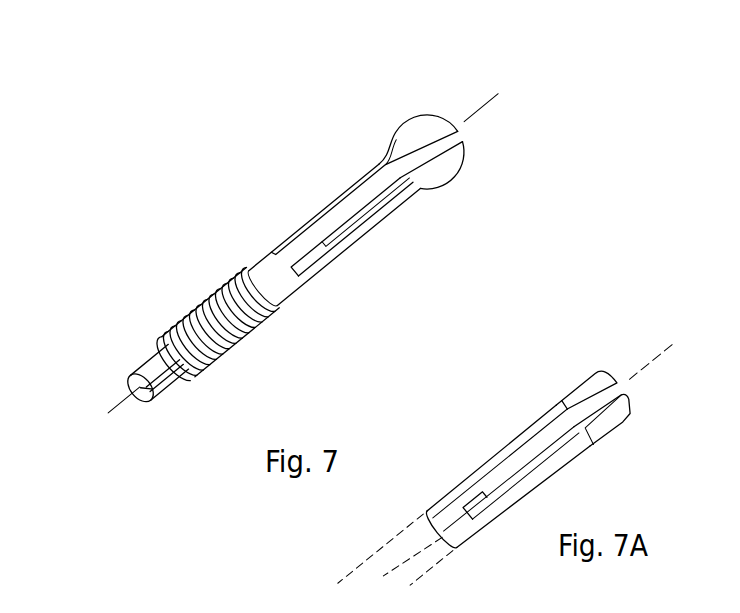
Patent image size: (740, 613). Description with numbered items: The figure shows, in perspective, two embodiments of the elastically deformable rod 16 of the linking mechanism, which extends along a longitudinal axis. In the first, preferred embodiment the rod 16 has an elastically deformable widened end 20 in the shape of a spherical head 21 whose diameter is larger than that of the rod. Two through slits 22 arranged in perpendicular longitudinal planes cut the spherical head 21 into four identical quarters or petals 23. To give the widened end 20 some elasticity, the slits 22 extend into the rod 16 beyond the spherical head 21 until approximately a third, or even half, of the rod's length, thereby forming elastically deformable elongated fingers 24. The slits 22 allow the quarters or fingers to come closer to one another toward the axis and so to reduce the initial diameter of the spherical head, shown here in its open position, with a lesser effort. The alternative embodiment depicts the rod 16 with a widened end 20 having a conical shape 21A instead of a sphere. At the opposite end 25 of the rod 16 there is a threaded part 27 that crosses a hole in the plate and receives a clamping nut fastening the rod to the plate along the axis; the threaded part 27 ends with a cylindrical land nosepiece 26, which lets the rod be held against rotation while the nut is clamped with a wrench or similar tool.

In FIG. 7, the elastically deformable rod 16 is at (250, 221).
In FIG. 7A, the elastically deformable rod 16 is at (498, 444).
In FIG. 7, the widened end 20 is at (452, 193).
In FIG. 7A, the widened end 20 is at (621, 437).
In FIG. 7, the spherical head 21 is at (421, 115).
In FIG. 7A, the conical shape 21A is at (607, 370).
In FIG. 7, the through slits 22 is at (347, 197).
In FIG. 7, the quarters or petals 23 is at (457, 125).
In FIG. 7, the elongated fingers 24 is at (383, 188).
In FIG. 7, the opposite end 25 is at (149, 341).
In FIG. 7, the cylindrical land nosepiece 26 is at (169, 410).
In FIG. 7, the threaded part 27 is at (233, 340).